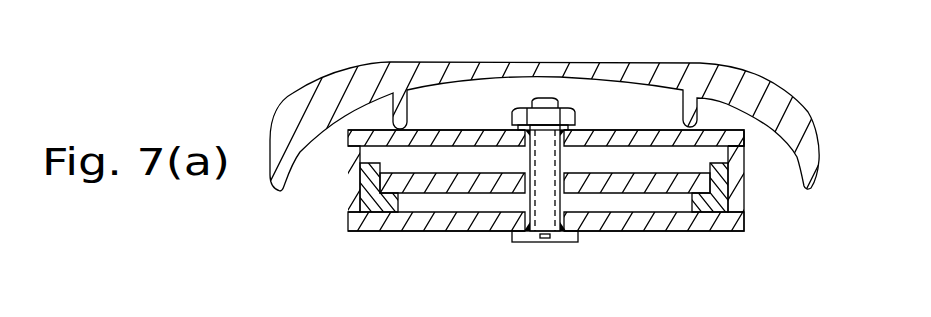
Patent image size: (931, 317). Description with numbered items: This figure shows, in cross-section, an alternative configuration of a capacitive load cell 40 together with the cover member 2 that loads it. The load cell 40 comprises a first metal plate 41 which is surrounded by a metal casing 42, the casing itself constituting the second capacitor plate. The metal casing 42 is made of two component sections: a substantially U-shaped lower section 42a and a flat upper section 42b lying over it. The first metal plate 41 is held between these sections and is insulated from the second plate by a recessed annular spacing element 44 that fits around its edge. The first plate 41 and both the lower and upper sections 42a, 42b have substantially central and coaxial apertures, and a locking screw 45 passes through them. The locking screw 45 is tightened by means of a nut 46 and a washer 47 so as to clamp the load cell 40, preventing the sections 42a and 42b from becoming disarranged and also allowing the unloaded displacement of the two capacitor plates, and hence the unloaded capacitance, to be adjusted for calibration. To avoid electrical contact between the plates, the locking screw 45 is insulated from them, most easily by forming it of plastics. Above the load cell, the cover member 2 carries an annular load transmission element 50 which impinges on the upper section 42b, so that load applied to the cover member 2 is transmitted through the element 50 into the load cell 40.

The cover member 2 is at (668, 68).
The capacitive load cell 40 is at (753, 211).
The first metal plate 41 is at (462, 190).
The metal casing 42 is at (342, 193).
The lower section 42a is at (383, 227).
The upper section 42b is at (433, 132).
The recessed annular spacing element 44 is at (708, 208).
The locking screw 45 is at (568, 238).
The nut 46 is at (567, 112).
The washer 47 is at (567, 128).
The annular load transmission element 50 is at (740, 146).